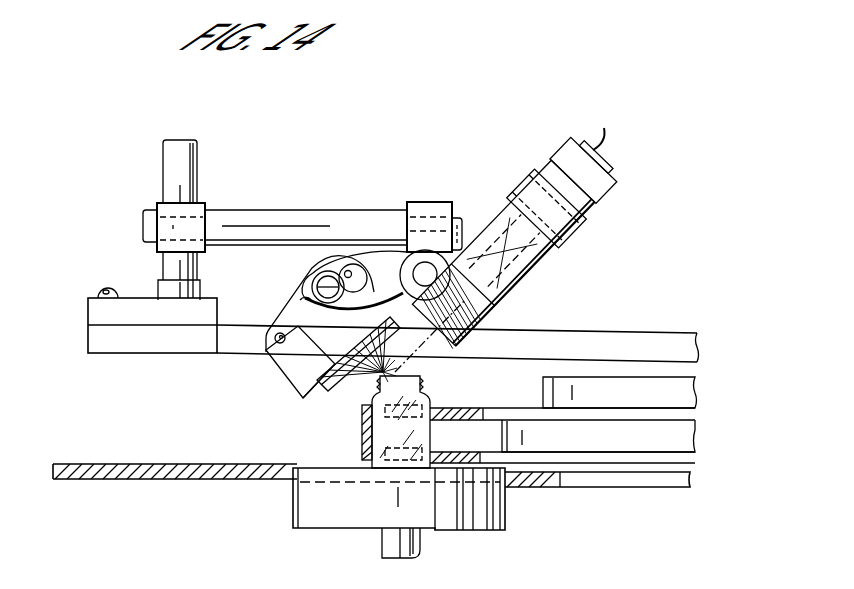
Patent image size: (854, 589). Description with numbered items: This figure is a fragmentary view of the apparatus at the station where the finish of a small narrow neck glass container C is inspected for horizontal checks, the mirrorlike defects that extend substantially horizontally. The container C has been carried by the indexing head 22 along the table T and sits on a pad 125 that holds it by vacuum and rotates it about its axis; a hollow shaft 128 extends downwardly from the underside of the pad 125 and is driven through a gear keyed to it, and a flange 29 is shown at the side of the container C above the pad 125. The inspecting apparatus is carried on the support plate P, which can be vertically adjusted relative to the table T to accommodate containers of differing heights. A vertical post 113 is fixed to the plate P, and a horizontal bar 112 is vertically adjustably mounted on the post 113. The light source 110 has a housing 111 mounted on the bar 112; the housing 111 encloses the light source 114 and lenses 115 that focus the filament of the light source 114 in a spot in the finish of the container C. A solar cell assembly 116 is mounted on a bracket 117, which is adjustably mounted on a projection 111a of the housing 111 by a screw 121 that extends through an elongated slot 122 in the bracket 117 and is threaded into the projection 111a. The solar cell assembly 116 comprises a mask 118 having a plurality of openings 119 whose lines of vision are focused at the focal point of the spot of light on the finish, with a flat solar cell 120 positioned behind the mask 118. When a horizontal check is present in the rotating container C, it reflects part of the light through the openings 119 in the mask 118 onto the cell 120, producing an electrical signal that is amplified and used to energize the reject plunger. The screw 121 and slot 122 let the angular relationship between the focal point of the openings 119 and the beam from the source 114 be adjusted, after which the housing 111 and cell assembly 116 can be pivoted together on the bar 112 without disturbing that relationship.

The vertical post 113 is at (171, 160).
The horizontal bar 112 is at (237, 224).
The projection of the housing 111a is at (377, 262).
The housing 111 is at (498, 230).
The light source 114 is at (552, 231).
The light source 110 is at (573, 252).
The lenses 115 is at (500, 318).
The elongated slot 122 is at (347, 272).
The screw 121 is at (321, 286).
The bracket 117 is at (287, 316).
The flat solar cell 120 is at (307, 377).
The solar cell assembly 116 is at (318, 401).
The mask 118 is at (333, 402).
The openings 119 is at (347, 384).
The flange 29 is at (362, 441).
The container C is at (418, 402).
The indexing head 22 is at (748, 392).
The table T is at (80, 463).
The support plate P is at (105, 338).
The pad 125 is at (308, 505).
The hollow shaft 128 is at (393, 546).